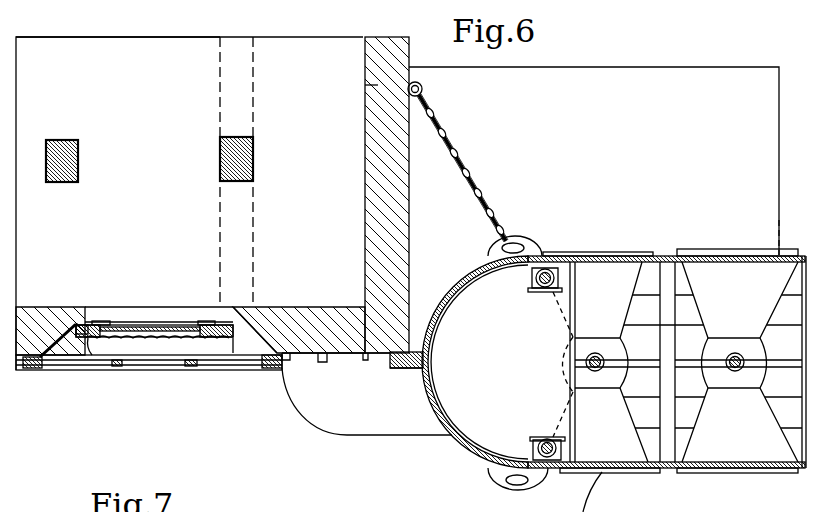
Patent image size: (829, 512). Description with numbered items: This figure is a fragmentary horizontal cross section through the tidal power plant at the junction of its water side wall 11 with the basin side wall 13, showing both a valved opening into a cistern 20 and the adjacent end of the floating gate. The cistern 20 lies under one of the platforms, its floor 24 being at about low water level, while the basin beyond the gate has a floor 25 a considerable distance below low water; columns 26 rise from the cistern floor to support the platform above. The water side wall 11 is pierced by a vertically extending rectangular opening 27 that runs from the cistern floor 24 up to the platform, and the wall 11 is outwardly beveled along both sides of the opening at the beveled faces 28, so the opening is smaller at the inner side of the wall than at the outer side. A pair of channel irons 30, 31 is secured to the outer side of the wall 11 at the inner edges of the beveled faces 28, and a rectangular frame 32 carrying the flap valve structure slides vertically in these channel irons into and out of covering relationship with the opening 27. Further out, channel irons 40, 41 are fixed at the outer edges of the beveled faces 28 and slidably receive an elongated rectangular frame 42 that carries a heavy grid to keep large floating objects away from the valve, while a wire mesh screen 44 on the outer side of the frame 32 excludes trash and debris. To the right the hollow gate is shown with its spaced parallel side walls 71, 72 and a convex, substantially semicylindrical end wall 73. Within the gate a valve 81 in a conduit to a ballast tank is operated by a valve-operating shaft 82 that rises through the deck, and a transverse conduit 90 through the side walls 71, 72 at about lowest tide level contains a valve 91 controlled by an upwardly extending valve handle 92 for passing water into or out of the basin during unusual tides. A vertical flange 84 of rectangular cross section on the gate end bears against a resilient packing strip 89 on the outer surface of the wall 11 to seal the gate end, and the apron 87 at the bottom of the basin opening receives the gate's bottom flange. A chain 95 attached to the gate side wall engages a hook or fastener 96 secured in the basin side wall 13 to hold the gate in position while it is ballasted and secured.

The water side wall 11 is at (42, 307).
The side wall 13 is at (378, 48).
The cistern 20 is at (172, 70).
The bottom wall or floor 24 is at (78, 48).
The bottom wall or floor 25 is at (672, 90).
The column 26 is at (78, 155).
The opening 27 is at (103, 322).
The beveled face 28 is at (60, 360).
The channel iron 30 is at (92, 355).
The channel iron 31 is at (233, 353).
The rectangular frame 32 is at (220, 322).
The channel iron 40 is at (42, 368).
The channel iron 41 is at (272, 370).
The frame 42 is at (253, 368).
The screen 44 is at (148, 340).
The side wall 71 is at (663, 255).
The side wall 72 is at (668, 470).
The end wall 73 is at (466, 453).
The valve 81 is at (532, 441).
The valve-operating shaft 82 is at (545, 438).
The flange 84 is at (398, 370).
The apron 87 is at (375, 422).
The packing strip 89 is at (390, 354).
The conduit 90 is at (598, 277).
The valve 91 is at (610, 378).
The valve handle 92 is at (595, 354).
The chain 95 is at (473, 177).
The fastener 96 is at (423, 88).